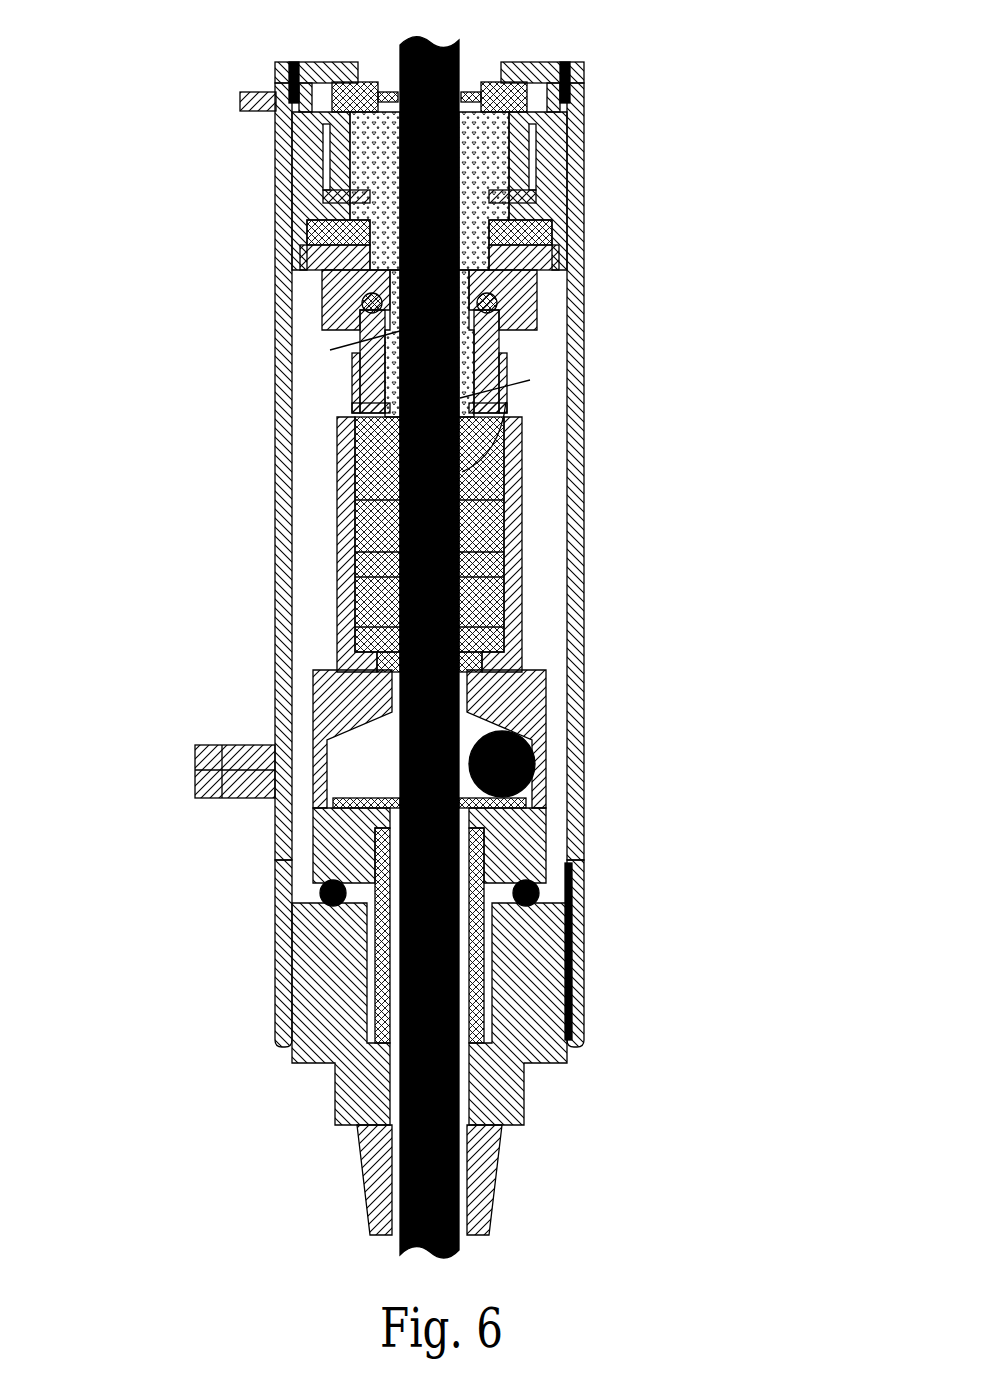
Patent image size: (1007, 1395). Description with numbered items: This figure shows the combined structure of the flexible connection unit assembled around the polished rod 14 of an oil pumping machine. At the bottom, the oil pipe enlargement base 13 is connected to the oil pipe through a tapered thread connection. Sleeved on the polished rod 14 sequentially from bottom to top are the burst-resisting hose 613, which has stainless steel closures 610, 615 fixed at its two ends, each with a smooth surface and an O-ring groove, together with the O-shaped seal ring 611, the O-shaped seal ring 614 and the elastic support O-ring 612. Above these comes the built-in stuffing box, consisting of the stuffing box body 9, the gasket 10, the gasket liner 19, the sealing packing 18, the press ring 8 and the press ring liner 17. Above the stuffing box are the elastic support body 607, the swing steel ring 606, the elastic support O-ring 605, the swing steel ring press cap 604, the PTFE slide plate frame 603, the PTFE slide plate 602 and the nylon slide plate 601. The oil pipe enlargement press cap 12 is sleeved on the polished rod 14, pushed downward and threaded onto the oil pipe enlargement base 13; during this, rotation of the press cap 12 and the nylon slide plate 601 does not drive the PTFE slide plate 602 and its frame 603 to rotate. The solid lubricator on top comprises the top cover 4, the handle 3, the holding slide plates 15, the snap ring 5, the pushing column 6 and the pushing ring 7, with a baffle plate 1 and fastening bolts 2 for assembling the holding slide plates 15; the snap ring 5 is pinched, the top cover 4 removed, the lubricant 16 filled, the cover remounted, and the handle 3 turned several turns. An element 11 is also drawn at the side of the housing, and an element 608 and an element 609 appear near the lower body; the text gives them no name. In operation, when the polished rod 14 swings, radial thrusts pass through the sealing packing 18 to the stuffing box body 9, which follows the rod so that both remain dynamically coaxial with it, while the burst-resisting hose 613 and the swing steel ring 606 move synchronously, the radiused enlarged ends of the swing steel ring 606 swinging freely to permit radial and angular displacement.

The baffle plate 1 is at (273, 68).
The fastening bolts 2 is at (287, 85).
The handle 3 is at (250, 112).
The top cover 4 is at (274, 148).
The snap ring 5 is at (283, 152).
The pushing column 6 is at (288, 163).
The pushing ring 7 is at (296, 118).
The press ring 8 is at (347, 390).
The stuffing box body 9 is at (343, 540).
The gasket 10 is at (355, 658).
The fastening bolt 11 is at (230, 742).
The oil pipe enlargement press cap 12 is at (280, 898).
The oil pipe enlargement base 13 is at (310, 998).
The polished rod 14 is at (400, 1133).
The holding slide plates 15 is at (560, 62).
The lubricant 16 is at (573, 118).
The nylon slide plate 601 is at (578, 185).
The PTFE slide plate 602 is at (578, 235).
The PTFE slide plate frame 603 is at (557, 257).
The swing steel ring press cap 604 is at (545, 285).
The elastic support O-ring 605 is at (495, 312).
The swing steel ring 606 is at (495, 353).
The elastic support body 607 is at (495, 437).
The press ring liner 17 is at (482, 478).
The sealing packing 18 is at (508, 580).
The gasket liner 19 is at (482, 657).
The O-ring 608 is at (550, 763).
The gasket ring 609 is at (545, 805).
The stainless steel closure 610 is at (495, 840).
The O-shaped seal ring 611 is at (545, 912).
The elastic support O-ring 612 is at (576, 945).
The burst-resisting hose 613 is at (572, 1007).
The O-shaped seal ring 614 is at (490, 1064).
The stainless steel closure 615 is at (495, 1098).